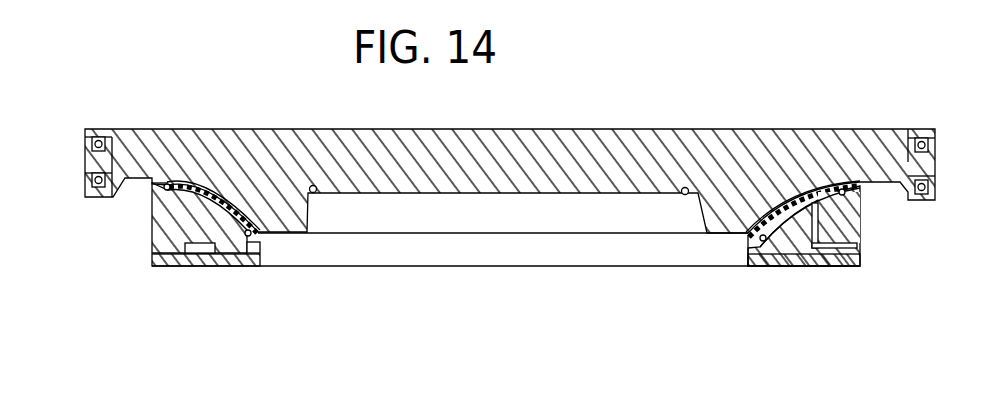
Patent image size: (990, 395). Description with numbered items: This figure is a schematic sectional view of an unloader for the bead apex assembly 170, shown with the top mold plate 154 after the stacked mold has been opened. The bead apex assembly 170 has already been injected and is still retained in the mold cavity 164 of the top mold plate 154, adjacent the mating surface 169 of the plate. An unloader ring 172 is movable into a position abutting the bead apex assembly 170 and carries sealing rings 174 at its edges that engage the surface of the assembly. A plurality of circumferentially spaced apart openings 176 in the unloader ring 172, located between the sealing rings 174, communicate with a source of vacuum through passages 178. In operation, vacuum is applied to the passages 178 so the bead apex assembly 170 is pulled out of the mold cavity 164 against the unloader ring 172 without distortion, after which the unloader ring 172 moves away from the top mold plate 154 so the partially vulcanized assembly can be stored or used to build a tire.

The top mold plate 154 is at (580, 142).
The mold cavity 164 is at (810, 188).
The mating surface 169 is at (728, 235).
The bead apex assembly 170 is at (784, 203).
The unloader ring 172 is at (793, 263).
The sealing rings 174 is at (152, 222).
The openings 176 is at (860, 240).
The passages 178 is at (843, 263).